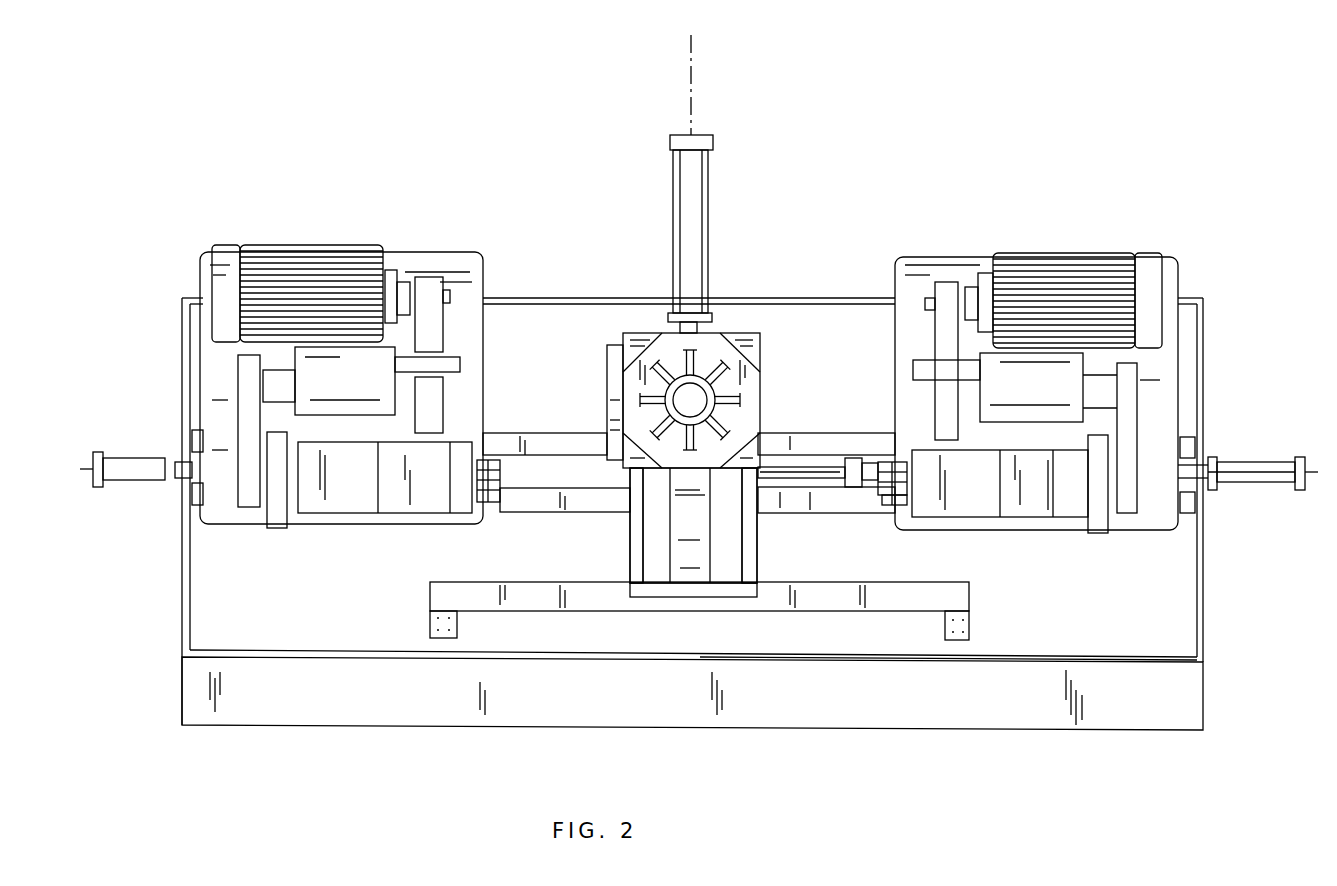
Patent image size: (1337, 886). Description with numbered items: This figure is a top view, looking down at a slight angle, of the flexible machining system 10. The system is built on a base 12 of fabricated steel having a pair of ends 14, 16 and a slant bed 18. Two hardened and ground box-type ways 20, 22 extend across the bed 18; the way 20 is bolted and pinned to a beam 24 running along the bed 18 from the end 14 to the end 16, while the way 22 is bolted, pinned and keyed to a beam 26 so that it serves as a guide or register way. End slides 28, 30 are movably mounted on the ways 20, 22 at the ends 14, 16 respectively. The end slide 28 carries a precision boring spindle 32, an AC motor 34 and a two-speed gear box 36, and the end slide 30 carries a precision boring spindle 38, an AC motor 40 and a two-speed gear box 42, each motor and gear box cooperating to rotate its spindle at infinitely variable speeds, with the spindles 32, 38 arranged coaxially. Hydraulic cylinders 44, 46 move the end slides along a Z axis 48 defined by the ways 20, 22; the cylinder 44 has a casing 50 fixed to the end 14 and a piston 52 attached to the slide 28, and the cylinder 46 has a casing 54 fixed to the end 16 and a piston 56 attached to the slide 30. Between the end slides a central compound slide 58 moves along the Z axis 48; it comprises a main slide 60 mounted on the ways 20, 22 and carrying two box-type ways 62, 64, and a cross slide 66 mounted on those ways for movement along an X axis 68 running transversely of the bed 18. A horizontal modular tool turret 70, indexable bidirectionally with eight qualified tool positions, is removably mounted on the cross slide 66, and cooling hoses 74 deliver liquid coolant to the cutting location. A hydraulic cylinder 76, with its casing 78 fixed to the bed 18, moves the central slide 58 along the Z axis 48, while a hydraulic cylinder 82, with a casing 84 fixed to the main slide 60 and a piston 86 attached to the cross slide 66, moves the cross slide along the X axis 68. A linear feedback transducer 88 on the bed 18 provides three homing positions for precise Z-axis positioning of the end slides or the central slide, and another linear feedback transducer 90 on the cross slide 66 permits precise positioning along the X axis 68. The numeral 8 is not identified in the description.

The rod 8 is at (780, 490).
The flexible machining system 10 is at (1170, 245).
The base 12 is at (655, 715).
The end 14 is at (182, 665).
The end 16 is at (1203, 585).
The slant bed 18 is at (1010, 645).
The way 20 is at (530, 440).
The way 22 is at (820, 500).
The beam 24 is at (1188, 437).
The beam 26 is at (1185, 512).
The end slide 28 is at (192, 500).
The end slide 30 is at (1180, 330).
The precision boring spindle 32 is at (488, 472).
The AC motor 34 is at (345, 245).
The two-speed gear box 36 is at (349, 427).
The precision boring spindle 38 is at (905, 492).
The AC motor 40 is at (1030, 258).
The two-speed gear box 42 is at (1025, 433).
The hydraulic cylinder 44 is at (98, 452).
The hydraulic cylinder 46 is at (1292, 465).
The Z axis 48 is at (1300, 457).
The casing 50 is at (136, 460).
The piston 52 is at (190, 470).
The casing 54 is at (1238, 470).
The piston 56 is at (1214, 465).
The central compound slide 58 is at (740, 615).
The main slide 60 is at (697, 575).
The way 62 is at (632, 540).
The way 64 is at (750, 575).
The cross slide 66 is at (760, 335).
The X axis 68 is at (691, 42).
The horizontal modular tool turret 70 is at (628, 322).
The cooling hoses 74 is at (665, 372).
The hydraulic cylinder 76 is at (850, 460).
The casing 78 is at (870, 482).
The hydraulic cylinder 82 is at (700, 135).
The casing 84 is at (698, 210).
The piston 86 is at (712, 318).
The linear feedback transducer 88 is at (530, 596).
The linear feedback transducer 90 is at (607, 442).